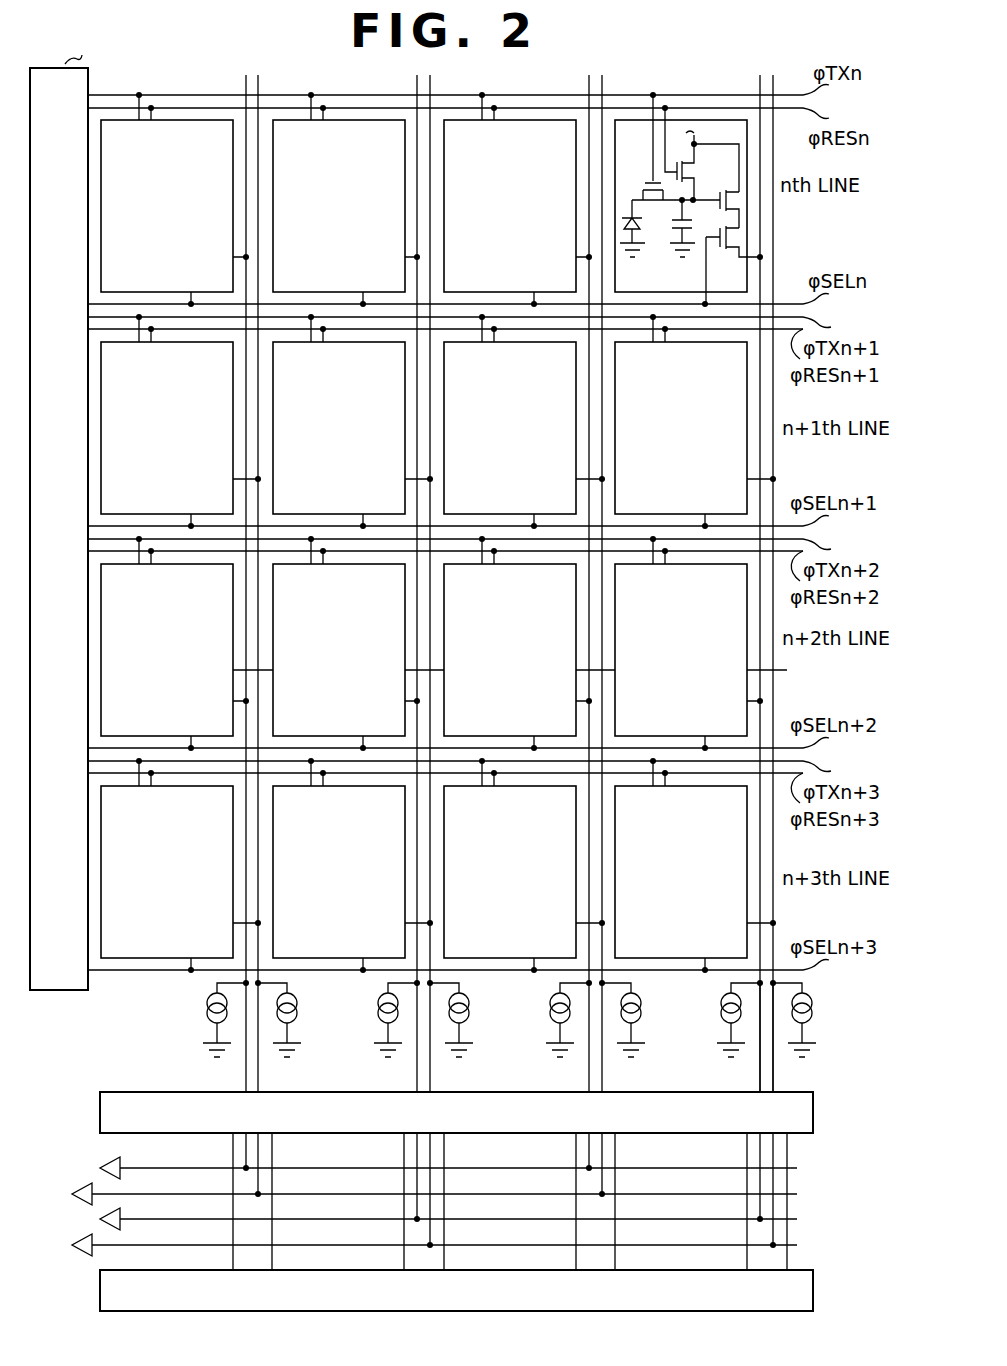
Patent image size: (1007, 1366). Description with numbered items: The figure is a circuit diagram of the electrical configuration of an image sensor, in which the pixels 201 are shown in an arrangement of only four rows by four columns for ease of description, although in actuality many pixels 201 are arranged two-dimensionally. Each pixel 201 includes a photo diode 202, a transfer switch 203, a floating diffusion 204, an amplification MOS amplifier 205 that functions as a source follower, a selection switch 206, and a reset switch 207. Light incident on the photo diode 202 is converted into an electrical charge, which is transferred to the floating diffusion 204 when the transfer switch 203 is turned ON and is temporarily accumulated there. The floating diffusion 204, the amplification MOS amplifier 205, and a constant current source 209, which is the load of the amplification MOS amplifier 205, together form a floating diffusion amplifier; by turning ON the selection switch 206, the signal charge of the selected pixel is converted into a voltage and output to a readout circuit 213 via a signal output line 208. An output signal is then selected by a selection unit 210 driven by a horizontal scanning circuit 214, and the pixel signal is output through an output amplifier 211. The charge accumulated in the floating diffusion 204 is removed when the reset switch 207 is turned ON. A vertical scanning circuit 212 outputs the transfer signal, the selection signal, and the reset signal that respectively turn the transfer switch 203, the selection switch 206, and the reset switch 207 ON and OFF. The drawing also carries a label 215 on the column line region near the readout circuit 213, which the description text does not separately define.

The pixel 201 is at (679, 120).
The photo diode 202 is at (650, 228).
The transfer switch 203 is at (645, 180).
The floating diffusion 204 is at (672, 232).
The amplification MOS amplifier 205 is at (739, 200).
The selection switch 206 is at (739, 237).
The reset switch 207 is at (716, 174).
The signal output line 208 is at (773, 472).
The constant current source 209 is at (211, 1000).
The selection unit 210 is at (788, 1155).
The output amplifier 211 is at (98, 1168).
The vertical scanning circuit 212 is at (141, 499).
The readout circuit 213 is at (814, 1110).
The horizontal scanning circuit 214 is at (814, 1288).
The vertical output line segment 215 is at (775, 1075).